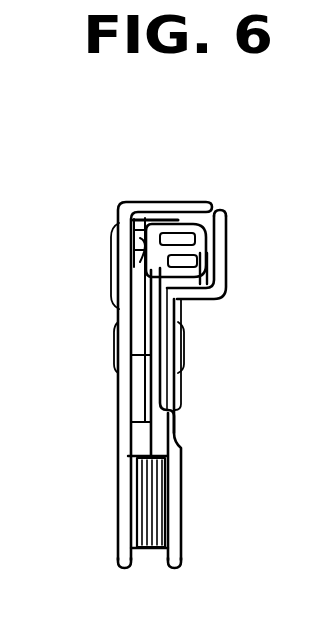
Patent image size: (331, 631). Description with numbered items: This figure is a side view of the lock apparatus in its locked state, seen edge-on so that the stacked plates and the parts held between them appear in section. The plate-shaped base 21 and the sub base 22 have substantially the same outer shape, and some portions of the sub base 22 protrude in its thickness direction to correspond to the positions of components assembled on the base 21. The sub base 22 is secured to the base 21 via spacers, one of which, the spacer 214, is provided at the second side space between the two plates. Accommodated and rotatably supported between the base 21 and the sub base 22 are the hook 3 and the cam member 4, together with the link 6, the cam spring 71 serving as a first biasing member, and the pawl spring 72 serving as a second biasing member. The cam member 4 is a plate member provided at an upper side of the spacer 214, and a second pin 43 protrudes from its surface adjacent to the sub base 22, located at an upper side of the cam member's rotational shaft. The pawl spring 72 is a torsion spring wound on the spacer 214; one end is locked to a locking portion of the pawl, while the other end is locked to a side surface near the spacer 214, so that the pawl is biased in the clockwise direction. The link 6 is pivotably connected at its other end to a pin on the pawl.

The base 21 is at (173, 198).
The sub base 22 is at (227, 232).
The second pin 43 is at (202, 222).
The cam spring 71 is at (220, 272).
The cam member 4 is at (123, 271).
The link 6 is at (127, 371).
The hook 3 is at (127, 437).
The spacer 214 is at (165, 473).
The pawl spring 72 is at (163, 492).